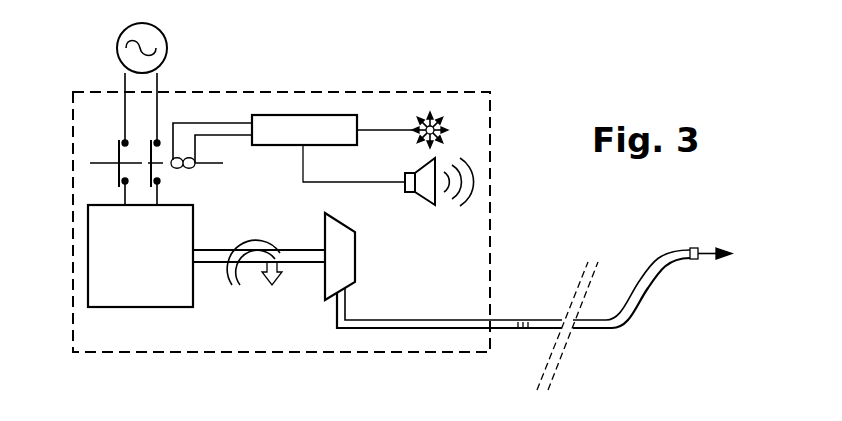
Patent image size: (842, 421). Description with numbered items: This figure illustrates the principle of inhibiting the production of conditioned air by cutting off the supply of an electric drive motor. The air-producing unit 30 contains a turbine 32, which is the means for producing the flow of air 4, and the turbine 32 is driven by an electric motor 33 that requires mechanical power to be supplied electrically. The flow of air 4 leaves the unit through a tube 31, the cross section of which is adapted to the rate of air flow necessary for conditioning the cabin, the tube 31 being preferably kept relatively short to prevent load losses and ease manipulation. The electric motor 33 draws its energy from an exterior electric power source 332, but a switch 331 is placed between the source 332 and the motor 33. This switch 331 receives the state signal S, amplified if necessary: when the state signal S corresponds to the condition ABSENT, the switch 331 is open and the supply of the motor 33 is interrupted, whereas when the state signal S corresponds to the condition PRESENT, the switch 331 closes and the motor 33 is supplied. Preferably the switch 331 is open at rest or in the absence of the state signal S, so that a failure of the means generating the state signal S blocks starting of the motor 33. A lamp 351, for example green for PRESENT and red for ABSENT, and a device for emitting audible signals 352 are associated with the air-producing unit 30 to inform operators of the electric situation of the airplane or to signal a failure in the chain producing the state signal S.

The air-producing unit 30 is at (60, 209).
The tube 31 is at (538, 330).
The turbine 32 is at (352, 265).
The electric motor 33 is at (157, 300).
The switch 331 is at (110, 160).
The exterior electric power source 332 is at (167, 43).
The lamp 351 is at (425, 115).
The device for emitting audible signals 352 is at (425, 196).
The flow of air 4 is at (708, 250).
The state signal S is at (303, 116).